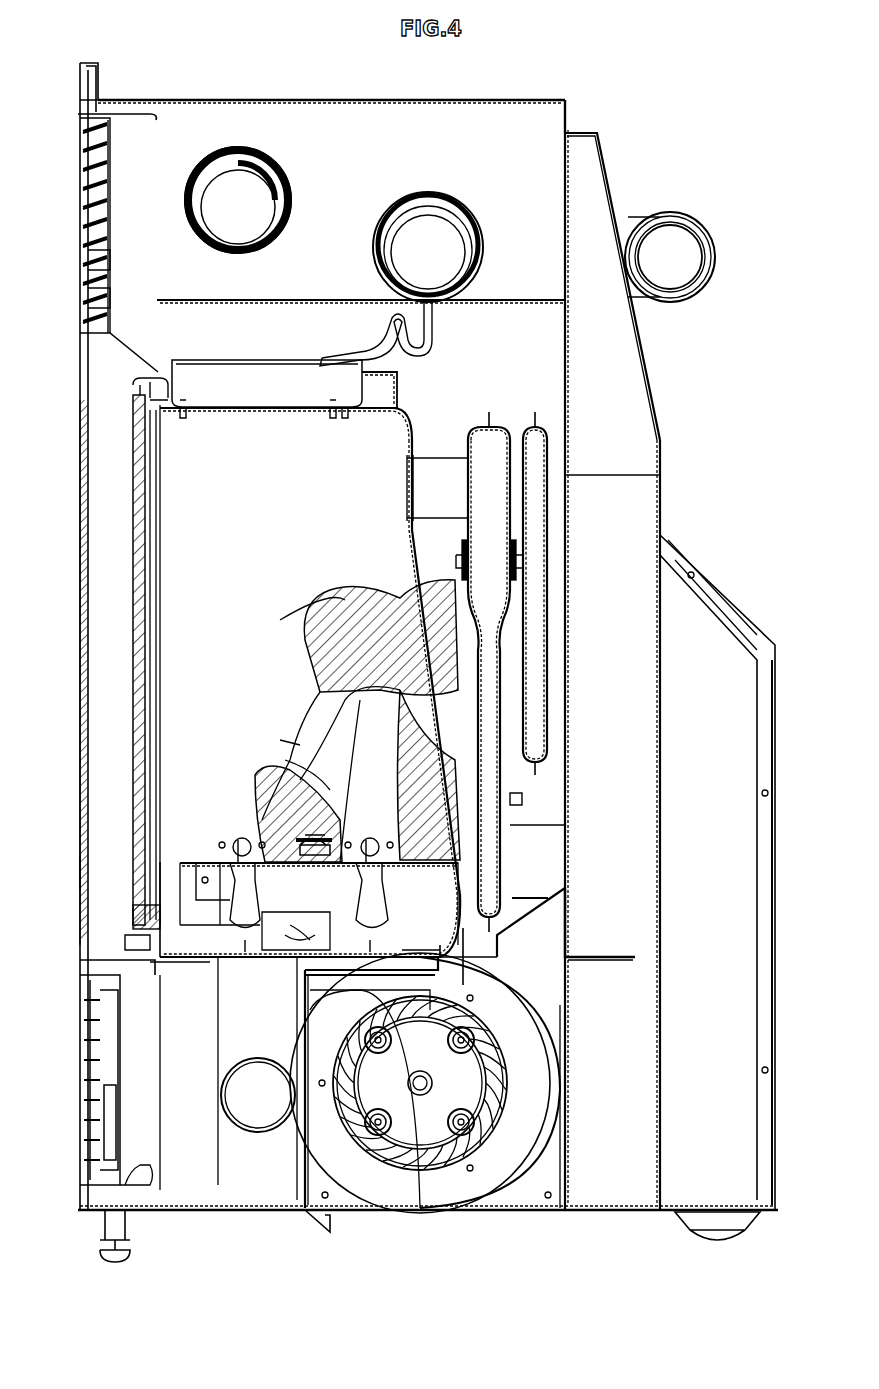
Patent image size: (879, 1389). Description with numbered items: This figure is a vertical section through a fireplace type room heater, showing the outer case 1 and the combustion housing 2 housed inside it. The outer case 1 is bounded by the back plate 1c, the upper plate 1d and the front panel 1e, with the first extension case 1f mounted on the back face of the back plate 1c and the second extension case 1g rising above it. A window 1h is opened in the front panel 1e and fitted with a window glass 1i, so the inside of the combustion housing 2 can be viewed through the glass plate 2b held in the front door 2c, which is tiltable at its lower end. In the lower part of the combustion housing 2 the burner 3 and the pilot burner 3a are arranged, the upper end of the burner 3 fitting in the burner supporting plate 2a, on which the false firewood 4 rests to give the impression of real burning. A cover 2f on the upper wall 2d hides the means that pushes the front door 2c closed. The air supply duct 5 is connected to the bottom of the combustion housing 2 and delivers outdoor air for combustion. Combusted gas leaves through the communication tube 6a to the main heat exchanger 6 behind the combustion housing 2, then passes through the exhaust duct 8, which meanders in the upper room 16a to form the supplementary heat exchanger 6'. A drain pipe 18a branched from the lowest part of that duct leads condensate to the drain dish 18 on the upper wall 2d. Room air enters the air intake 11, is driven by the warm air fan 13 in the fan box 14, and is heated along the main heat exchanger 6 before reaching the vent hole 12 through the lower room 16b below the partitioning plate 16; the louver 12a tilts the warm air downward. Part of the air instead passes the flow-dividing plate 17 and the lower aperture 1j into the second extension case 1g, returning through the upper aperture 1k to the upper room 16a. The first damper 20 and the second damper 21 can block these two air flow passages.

The outer case 1 is at (563, 88).
The back plate 1c is at (567, 545).
The upper plate 1d is at (333, 101).
The front panel 1e is at (82, 950).
The first extension case 1f is at (778, 724).
The second extension case 1g is at (661, 884).
The window 1h is at (82, 875).
The window glass 1i is at (82, 449).
The lower aperture 1j is at (568, 905).
The upper aperture 1k is at (573, 184).
The combustion housing 2 is at (125, 507).
The burner supporting plate 2a is at (205, 862).
The glass plate 2b is at (130, 588).
The front door 2c is at (130, 910).
The upper wall 2d is at (224, 409).
The cover 2f is at (395, 374).
The burner 3 is at (310, 868).
The pilot burner 3a is at (285, 822).
The false firewood 4 is at (280, 735).
The air supply duct 5 is at (240, 1120).
The main heat exchanger 6 is at (535, 672).
The supplementary heat exchanger 6' is at (428, 209).
The communication tube 6a is at (440, 520).
The exhaust duct 8 is at (238, 168).
The air intake 11 is at (80, 1090).
The vent hole 12 is at (80, 243).
The louver 12a is at (84, 300).
The warm air fan 13 is at (410, 1160).
The fan box 14 is at (305, 1180).
The partitioning plate 16 is at (332, 300).
The upper room 16a is at (335, 199).
The lower room 16b is at (335, 329).
The flow-dividing plate 17 is at (534, 905).
The drain dish 18 is at (226, 360).
The drain pipe 18a is at (430, 322).
The first damper 20 is at (470, 975).
The second damper 21 is at (570, 957).